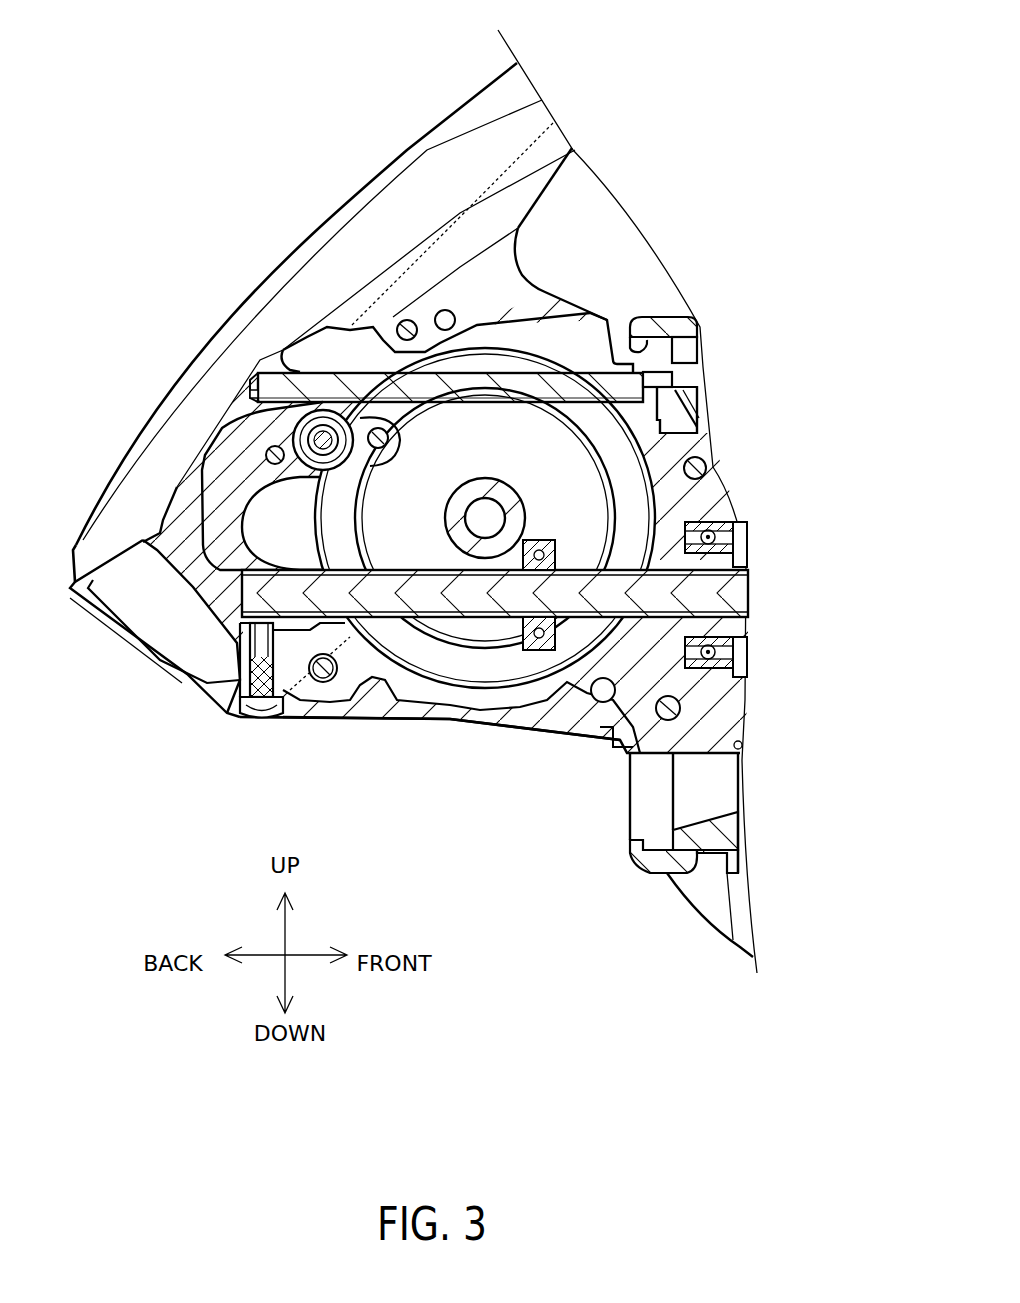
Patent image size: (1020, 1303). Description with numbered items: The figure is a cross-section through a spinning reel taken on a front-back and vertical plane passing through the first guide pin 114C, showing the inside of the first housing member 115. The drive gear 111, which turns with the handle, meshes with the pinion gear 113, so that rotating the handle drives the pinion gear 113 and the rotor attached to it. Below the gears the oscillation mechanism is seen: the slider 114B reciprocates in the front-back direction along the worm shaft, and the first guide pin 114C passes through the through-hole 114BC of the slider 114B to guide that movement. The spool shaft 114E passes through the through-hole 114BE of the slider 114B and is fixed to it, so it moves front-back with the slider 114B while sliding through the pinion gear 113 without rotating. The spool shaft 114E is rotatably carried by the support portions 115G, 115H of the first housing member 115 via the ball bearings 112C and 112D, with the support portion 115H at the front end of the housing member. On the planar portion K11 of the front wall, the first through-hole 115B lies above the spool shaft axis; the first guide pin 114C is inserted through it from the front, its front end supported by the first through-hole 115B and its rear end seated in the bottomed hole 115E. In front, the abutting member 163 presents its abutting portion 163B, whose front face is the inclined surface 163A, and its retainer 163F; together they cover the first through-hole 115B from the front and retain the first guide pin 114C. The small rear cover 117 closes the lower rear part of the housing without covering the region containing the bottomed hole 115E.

The first housing member 115 is at (520, 123).
The first guide pin 114C is at (524, 388).
The planar portion K11 is at (633, 323).
The abutting portion 163B is at (672, 330).
The inclined surface 163A is at (680, 380).
The first through-hole 115B is at (700, 397).
The abutting member 163 is at (700, 397).
The retainer 163F is at (697, 400).
The drive gear 111 is at (640, 507).
The support portion 115H is at (710, 673).
The ball bearing 112D is at (747, 558).
The rear cover 117 is at (147, 647).
The through-hole 114BE is at (250, 610).
The spool shaft 114E is at (373, 597).
The support portion 115G is at (537, 650).
The pinion gear 113 is at (530, 645).
The ball bearing 112C is at (575, 625).
The through-hole 114BC is at (283, 375).
The bottomed hole 115E is at (240, 392).
The slider 114B is at (220, 517).